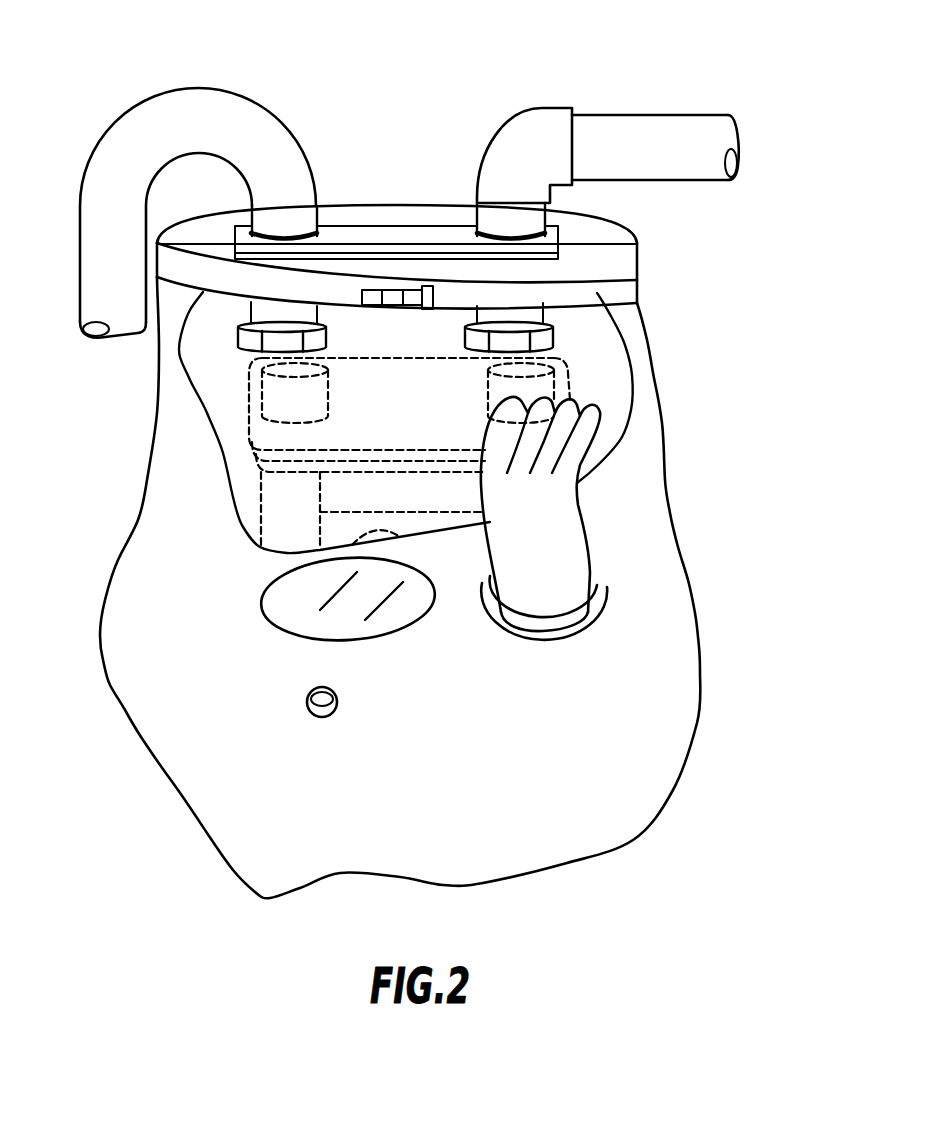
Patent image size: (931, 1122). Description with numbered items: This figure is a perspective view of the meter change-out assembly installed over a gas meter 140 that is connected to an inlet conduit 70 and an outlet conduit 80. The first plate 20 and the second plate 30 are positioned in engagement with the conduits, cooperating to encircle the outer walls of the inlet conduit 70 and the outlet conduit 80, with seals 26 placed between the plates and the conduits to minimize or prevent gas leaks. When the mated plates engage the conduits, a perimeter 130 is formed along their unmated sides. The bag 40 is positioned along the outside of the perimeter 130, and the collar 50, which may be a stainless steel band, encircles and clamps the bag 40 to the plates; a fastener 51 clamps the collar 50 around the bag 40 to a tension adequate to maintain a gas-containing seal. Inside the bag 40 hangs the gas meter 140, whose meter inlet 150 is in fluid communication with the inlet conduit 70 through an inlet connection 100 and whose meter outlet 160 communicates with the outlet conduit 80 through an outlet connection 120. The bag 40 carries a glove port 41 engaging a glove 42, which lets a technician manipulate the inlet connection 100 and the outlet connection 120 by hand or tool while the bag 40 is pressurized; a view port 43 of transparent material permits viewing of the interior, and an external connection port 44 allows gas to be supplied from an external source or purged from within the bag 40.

The first plate 20 is at (482, 242).
The seals 26 is at (249, 224).
The second plate 30 is at (622, 286).
The bag 40 is at (660, 414).
The glove port 41 is at (577, 637).
The glove 42 is at (595, 488).
The view port 43 is at (272, 582).
The external connection port 44 is at (314, 687).
The collar 50 is at (557, 264).
The fastener 51 is at (392, 306).
The inlet conduit 70 is at (197, 87).
The outlet conduit 80 is at (693, 113).
The inlet connection 100 is at (259, 380).
The outlet connection 120 is at (553, 337).
The perimeter 130 is at (474, 242).
The gas meter 140 is at (260, 507).
The meter inlet 150 is at (408, 441).
The meter outlet 160 is at (556, 402).